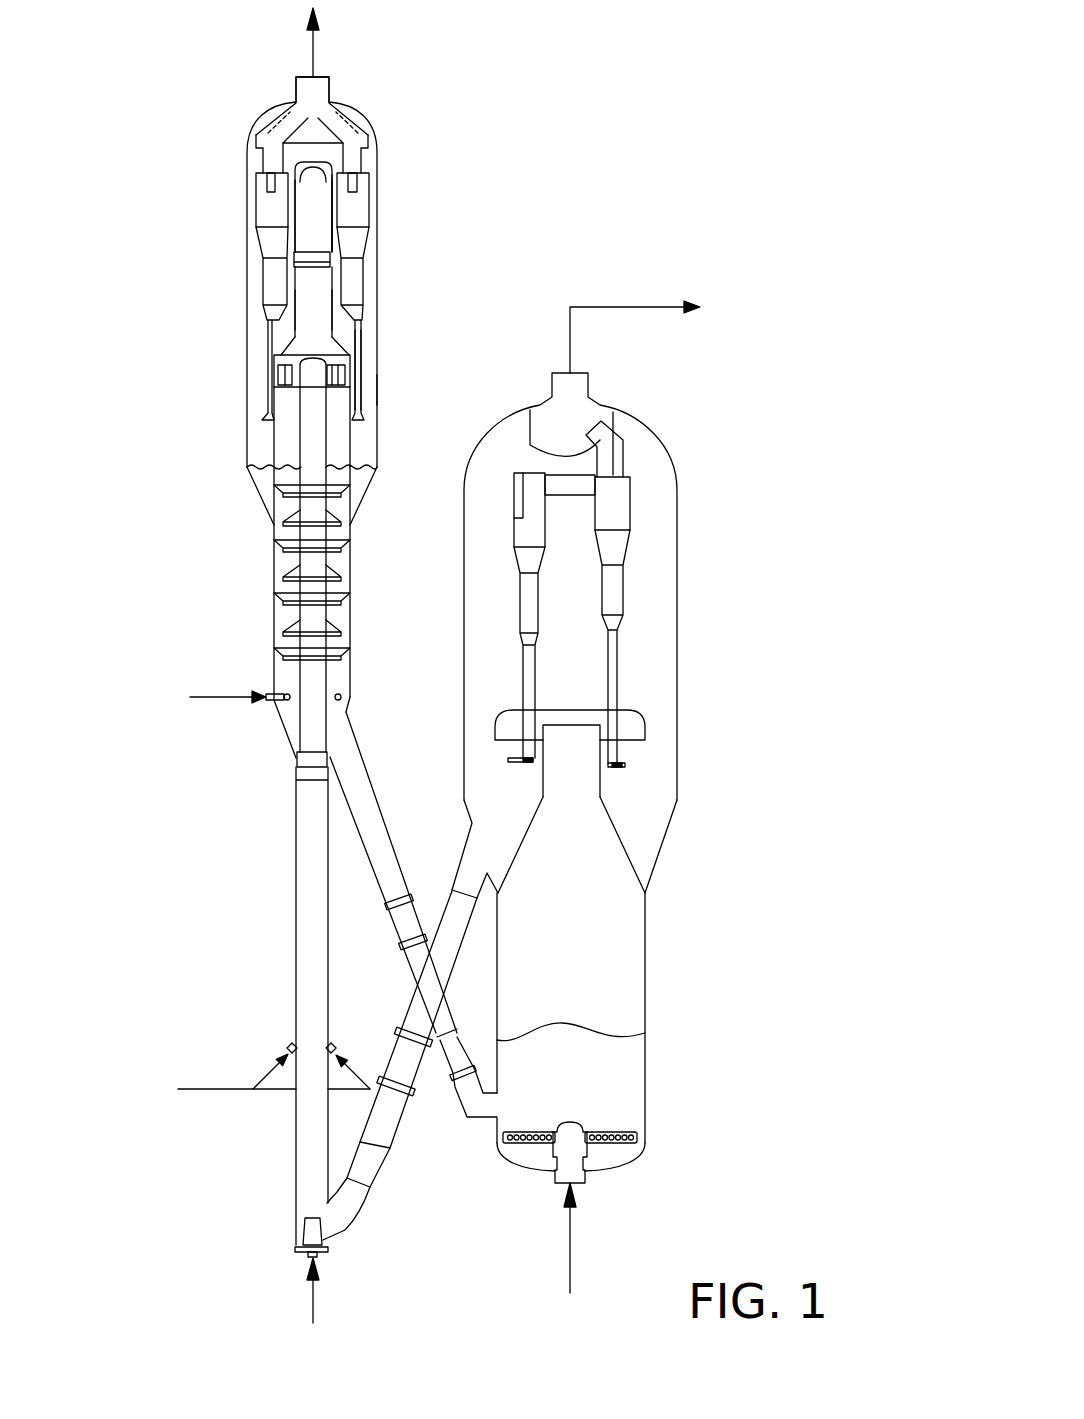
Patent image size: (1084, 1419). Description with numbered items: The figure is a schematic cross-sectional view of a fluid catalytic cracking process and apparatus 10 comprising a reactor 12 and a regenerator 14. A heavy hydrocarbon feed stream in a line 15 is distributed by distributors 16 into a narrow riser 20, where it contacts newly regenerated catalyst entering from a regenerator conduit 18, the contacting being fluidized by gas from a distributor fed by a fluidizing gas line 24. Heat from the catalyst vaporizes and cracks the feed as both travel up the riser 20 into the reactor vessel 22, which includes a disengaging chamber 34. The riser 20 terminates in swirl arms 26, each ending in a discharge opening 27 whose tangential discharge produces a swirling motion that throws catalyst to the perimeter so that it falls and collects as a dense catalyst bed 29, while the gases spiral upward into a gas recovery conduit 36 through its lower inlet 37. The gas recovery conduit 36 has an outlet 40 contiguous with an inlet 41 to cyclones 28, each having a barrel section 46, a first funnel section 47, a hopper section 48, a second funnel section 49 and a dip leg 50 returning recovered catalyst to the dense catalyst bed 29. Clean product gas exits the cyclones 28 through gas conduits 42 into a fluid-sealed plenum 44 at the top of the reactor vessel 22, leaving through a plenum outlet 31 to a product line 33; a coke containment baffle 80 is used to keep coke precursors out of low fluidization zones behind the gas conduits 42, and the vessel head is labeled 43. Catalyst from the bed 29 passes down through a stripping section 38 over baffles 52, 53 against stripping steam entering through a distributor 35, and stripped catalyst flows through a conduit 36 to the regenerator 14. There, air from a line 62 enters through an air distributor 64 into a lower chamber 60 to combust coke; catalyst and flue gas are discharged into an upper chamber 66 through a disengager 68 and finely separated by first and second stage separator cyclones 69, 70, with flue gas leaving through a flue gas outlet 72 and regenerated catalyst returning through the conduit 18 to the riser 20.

The process and apparatus 10 is at (620, 125).
The reactor 12 is at (392, 122).
The regenerator 14 is at (707, 416).
The line 15 is at (220, 1093).
The distributors 16 is at (293, 1043).
The regenerator conduit 18 is at (400, 1065).
The riser 20 is at (331, 893).
The reactor vessel 22 is at (380, 393).
The fluidizing gas line 24 is at (313, 1310).
The swirl arms 26 is at (285, 373).
The discharge opening 27 is at (288, 385).
The cyclones 28 is at (267, 210).
The dense catalyst bed 29 is at (257, 482).
The plenum outlet 31 is at (327, 82).
The product line 33 is at (312, 47).
The disengaging chamber 34 is at (273, 432).
The distributor 35 is at (297, 700).
The gas recovery conduit 36 is at (318, 308).
The inlet 37 is at (313, 337).
The stripping section 38 is at (273, 565).
The outlet 40 is at (331, 170).
The inlet 41 is at (330, 180).
The gas conduits 42 is at (278, 138).
The vessel head 43 is at (378, 138).
The plenum 44 is at (257, 135).
The barrel section 46 is at (362, 197).
The first funnel section 47 is at (353, 245).
The hopper section 48 is at (355, 275).
The second funnel section 49 is at (357, 313).
The dip leg 50 is at (357, 387).
The baffles 52 is at (327, 567).
The baffles 53 is at (338, 597).
The lower chamber 60 is at (613, 960).
The line 62 is at (567, 1255).
The air distributor 64 is at (613, 1132).
The upper chamber 66 is at (673, 668).
The disengager 68 is at (632, 728).
The first stage separator cyclone 69 is at (515, 540).
The second stage separator cyclone 70 is at (633, 540).
The flue gas outlet 72 is at (588, 388).
The coke containment baffle 80 is at (298, 100).